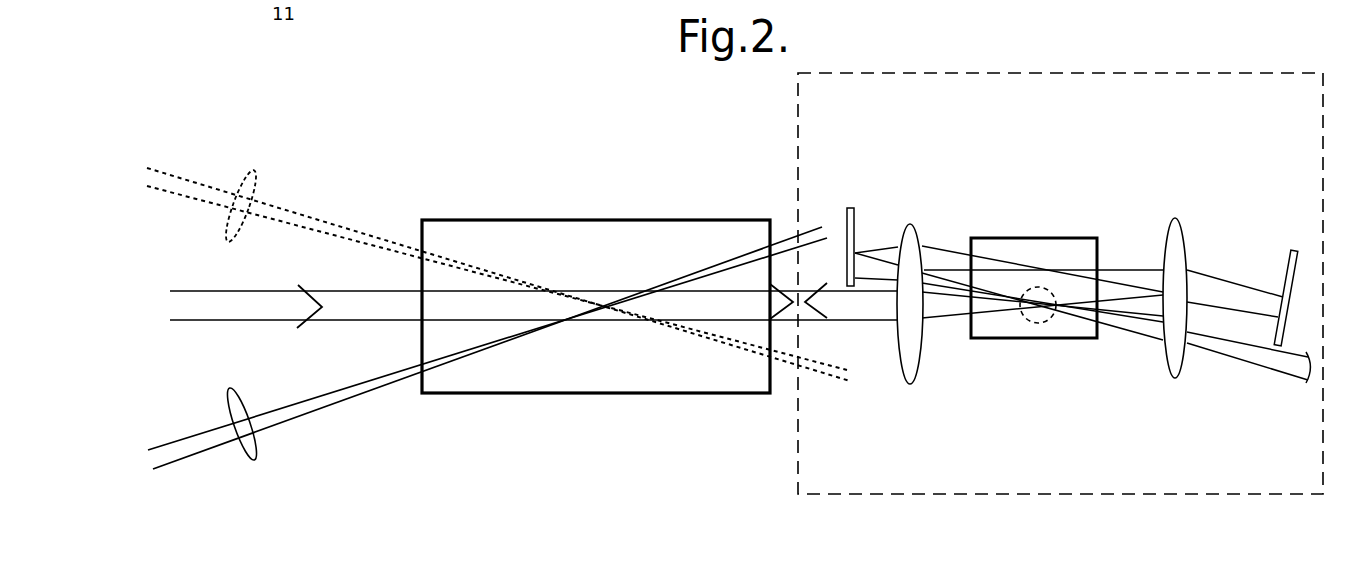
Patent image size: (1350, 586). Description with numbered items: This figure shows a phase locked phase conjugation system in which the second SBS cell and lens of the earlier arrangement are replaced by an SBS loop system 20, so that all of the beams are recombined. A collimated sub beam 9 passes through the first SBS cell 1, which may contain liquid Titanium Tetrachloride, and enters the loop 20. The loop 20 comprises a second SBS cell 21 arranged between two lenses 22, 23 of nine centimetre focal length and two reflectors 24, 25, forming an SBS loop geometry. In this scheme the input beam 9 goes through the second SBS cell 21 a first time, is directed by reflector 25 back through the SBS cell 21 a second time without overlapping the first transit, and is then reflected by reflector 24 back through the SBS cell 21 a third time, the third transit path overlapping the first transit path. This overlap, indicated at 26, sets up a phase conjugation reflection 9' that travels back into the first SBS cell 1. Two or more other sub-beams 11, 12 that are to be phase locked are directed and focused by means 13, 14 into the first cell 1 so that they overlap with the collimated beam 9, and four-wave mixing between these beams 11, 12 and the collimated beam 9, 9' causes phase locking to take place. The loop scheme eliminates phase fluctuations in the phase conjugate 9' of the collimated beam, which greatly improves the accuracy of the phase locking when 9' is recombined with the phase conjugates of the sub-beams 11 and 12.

The first SBS cell 1 is at (449, 205).
The collimated sub beam 9 is at (533, 294).
The phase conjugate 9' is at (836, 322).
The sub-beam 11 is at (307, 413).
The sub-beam 12 is at (284, 207).
The directing and focusing means 13 is at (240, 445).
The directing and focusing means 14 is at (244, 184).
The SBS loop system 20 is at (1150, 55).
The second SBS cell 21 is at (975, 340).
The lens 22 is at (920, 377).
The lens 23 is at (1180, 360).
The reflector 24 is at (856, 216).
The reflector 25 is at (1285, 262).
The overlap 26 is at (1052, 322).